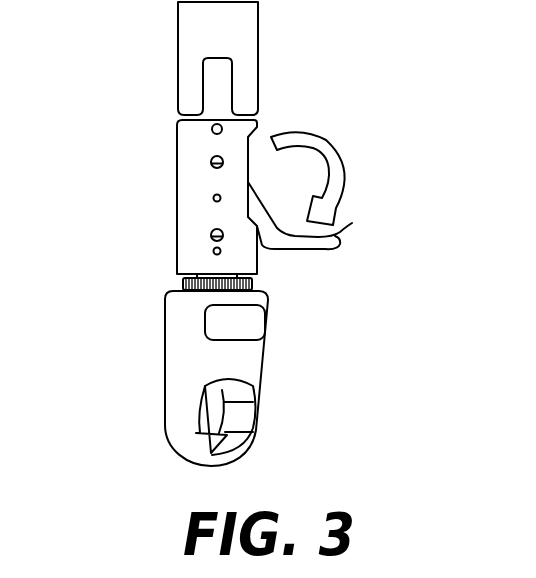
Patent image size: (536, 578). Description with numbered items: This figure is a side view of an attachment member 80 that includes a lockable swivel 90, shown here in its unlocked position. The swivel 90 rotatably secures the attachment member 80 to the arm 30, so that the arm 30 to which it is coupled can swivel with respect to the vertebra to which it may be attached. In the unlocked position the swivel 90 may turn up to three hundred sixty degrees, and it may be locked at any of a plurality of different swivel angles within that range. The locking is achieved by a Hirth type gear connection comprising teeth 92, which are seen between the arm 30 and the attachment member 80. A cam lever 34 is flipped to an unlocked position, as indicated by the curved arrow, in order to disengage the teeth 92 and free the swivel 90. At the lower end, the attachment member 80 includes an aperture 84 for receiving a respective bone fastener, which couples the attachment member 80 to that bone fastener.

The arm 30 is at (156, 35).
The cam lever 34 is at (352, 223).
The teeth 92 is at (285, 285).
The attachment member 80 is at (144, 313).
The lockable swivel 90 is at (165, 360).
The aperture 84 is at (246, 421).